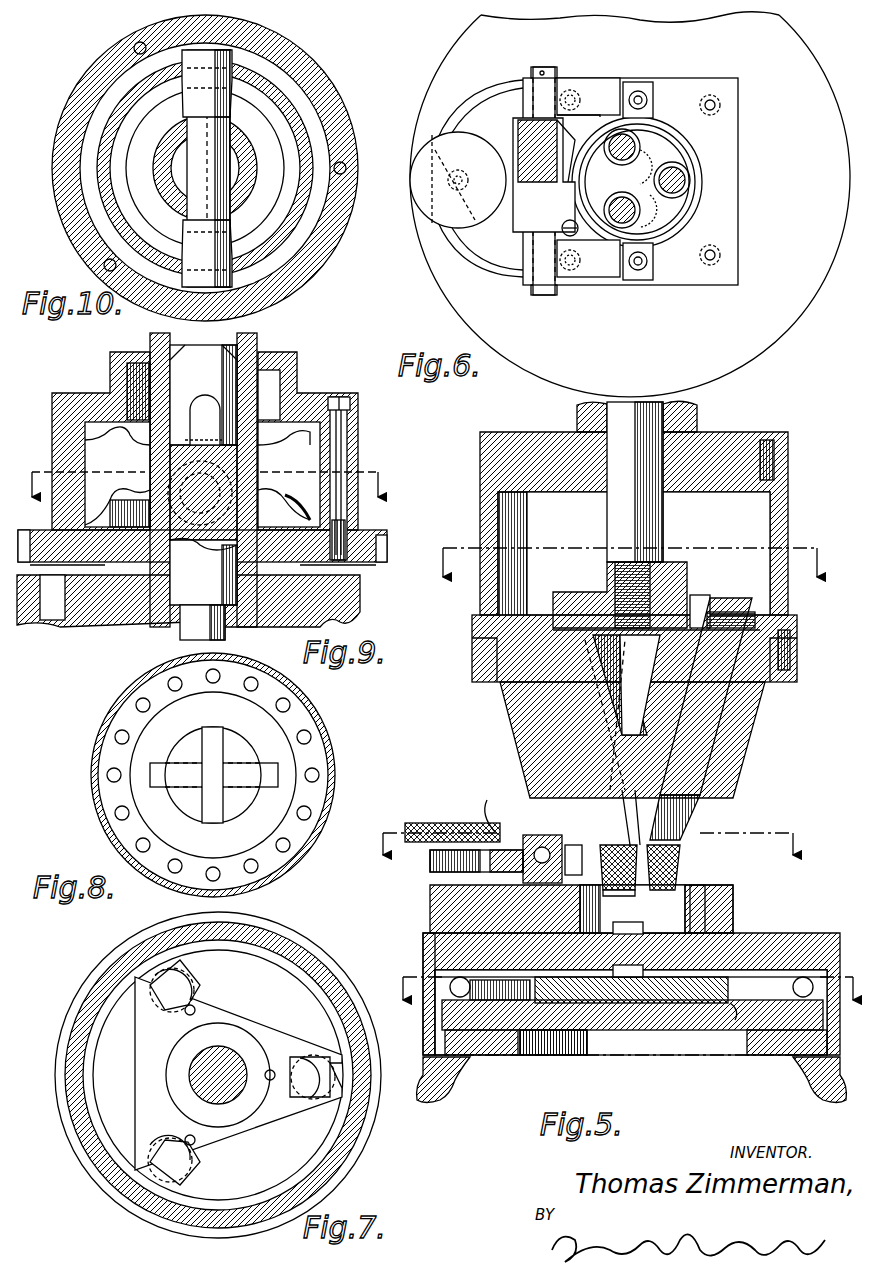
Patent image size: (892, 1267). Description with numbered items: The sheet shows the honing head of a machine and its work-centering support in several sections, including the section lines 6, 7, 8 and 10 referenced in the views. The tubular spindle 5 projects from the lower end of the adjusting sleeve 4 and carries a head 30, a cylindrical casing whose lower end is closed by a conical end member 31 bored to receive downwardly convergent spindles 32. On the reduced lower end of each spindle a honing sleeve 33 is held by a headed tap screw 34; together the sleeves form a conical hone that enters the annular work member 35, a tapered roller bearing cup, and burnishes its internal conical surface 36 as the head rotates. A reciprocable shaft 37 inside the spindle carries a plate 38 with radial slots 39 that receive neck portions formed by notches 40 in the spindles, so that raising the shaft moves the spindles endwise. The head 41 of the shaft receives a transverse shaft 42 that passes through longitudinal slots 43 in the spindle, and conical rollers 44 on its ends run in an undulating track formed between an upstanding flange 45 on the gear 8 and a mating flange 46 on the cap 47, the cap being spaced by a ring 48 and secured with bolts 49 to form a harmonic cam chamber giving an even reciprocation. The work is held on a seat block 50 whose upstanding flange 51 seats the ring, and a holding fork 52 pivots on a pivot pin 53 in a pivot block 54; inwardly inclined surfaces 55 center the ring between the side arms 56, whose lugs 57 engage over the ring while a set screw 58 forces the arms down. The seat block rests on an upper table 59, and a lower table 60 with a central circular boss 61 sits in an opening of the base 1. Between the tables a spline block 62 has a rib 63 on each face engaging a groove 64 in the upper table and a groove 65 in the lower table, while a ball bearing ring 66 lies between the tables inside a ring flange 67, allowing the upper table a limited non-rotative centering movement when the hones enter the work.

In FIG. 5, the base 1 is at (445, 1088).
In FIG. 9, the adjusting sleeve 4 is at (360, 582).
In FIG. 10, the tubular spindle 5 is at (245, 188).
In FIG. 9, the tubular spindle 5 is at (252, 342).
In FIG. 5, the tubular spindle 5 is at (688, 418).
In FIG. 5, the section line 6- 6 is at (586, 856).
In FIG. 9, the section line 7- 7 is at (346, 612).
In FIG. 5, the section line 7- 7 is at (630, 575).
In FIG. 9, the gear 8 is at (387, 548).
In FIG. 5, the gear 8 is at (625, 1003).
In FIG. 9, the section line 10- 10 is at (206, 497).
In FIG. 7, the head 30 is at (345, 1136).
In FIG. 5, the head 30 is at (790, 512).
In FIG. 5, the conical end member 31 is at (748, 738).
In FIG. 6, the spindles 32 is at (686, 187).
In FIG. 7, the spindles 32 is at (185, 970).
In FIG. 5, the spindles 32 is at (701, 719).
In FIG. 6, the honing sleeve 33 is at (657, 192).
In FIG. 5, the honing sleeve 33 is at (708, 846).
In FIG. 5, the headed tap screw 34 is at (615, 896).
In FIG. 6, the annular work member 35 is at (698, 153).
In FIG. 5, the annular work member 35 is at (700, 830).
In FIG. 6, the internal conical surface 36 is at (686, 140).
In FIG. 5, the internal conical surface 36 is at (574, 845).
In FIG. 9, the reciprocable shaft 37 is at (190, 634).
In FIG. 7, the reciprocable shaft 37 is at (200, 1085).
In FIG. 5, the reciprocable shaft 37 is at (635, 482).
In FIG. 7, the plate 38 is at (248, 996).
In FIG. 5, the plate 38 is at (672, 595).
In FIG. 7, the radial slots 39 is at (196, 1010).
In FIG. 5, the radial slots 39 is at (700, 615).
In FIG. 5, the notch 40 is at (735, 618).
In FIG. 10, the head of the shaft 41 is at (170, 176).
In FIG. 9, the head of the shaft 41 is at (203, 571).
In FIG. 10, the transverse shaft 42 is at (208, 168).
In FIG. 9, the transverse shaft 42 is at (170, 480).
In FIG. 9, the longitudinal slots 43 is at (203, 395).
In FIG. 10, the conical rollers 44 is at (236, 62).
In FIG. 9, the conical rollers 44 is at (203, 435).
In FIG. 10, the upstanding flange 45 is at (286, 242).
In FIG. 9, the upstanding flange 45 is at (295, 512).
In FIG. 9, the flange 46 is at (202, 474).
In FIG. 9, the cap 47 is at (305, 396).
In FIG. 10, the ring 48 is at (338, 120).
In FIG. 9, the ring 48 is at (350, 460).
In FIG. 10, the bolts 49 is at (134, 46).
In FIG. 9, the bolts 49 is at (350, 432).
In FIG. 6, the seat block 50 is at (730, 166).
In FIG. 5, the seat block 50 is at (435, 916).
In FIG. 5, the upstanding flange 51 is at (700, 880).
In FIG. 6, the holding fork 52 is at (505, 262).
In FIG. 5, the holding fork 52 is at (430, 862).
In FIG. 6, the pivot pin 53 is at (543, 66).
In FIG. 5, the pivot pin 53 is at (530, 835).
In FIG. 6, the pivot block 54 is at (515, 118).
In FIG. 5, the pivot block 54 is at (498, 805).
In FIG. 6, the inwardly inclined surfaces 55 is at (578, 140).
In FIG. 6, the side arms 56 is at (594, 95).
In FIG. 6, the lugs 57 is at (653, 108).
In FIG. 5, the lugs 57 is at (638, 830).
In FIG. 6, the set screw 58 is at (422, 205).
In FIG. 5, the set screw 58 is at (436, 822).
In FIG. 6, the upper table 59 is at (794, 305).
In FIG. 5, the upper table 59 is at (440, 953).
In FIG. 8, the lower table 60 is at (213, 775).
In FIG. 5, the lower table 60 is at (556, 1057).
In FIG. 5, the central circular boss 61 is at (672, 1030).
In FIG. 8, the spline block 62 is at (240, 750).
In FIG. 5, the spline block 62 is at (655, 1003).
In FIG. 8, the rib 63 is at (212, 730).
In FIG. 5, the rib 63 is at (640, 965).
In FIG. 5, the groove 64 is at (624, 920).
In FIG. 8, the groove 65 is at (270, 785).
In FIG. 5, the groove 65 is at (735, 1020).
In FIG. 8, the ball bearing ring 66 is at (318, 794).
In FIG. 5, the ball bearing ring 66 is at (450, 975).
In FIG. 8, the ring flange 67 is at (332, 742).
In FIG. 5, the ring flange 67 is at (428, 1043).